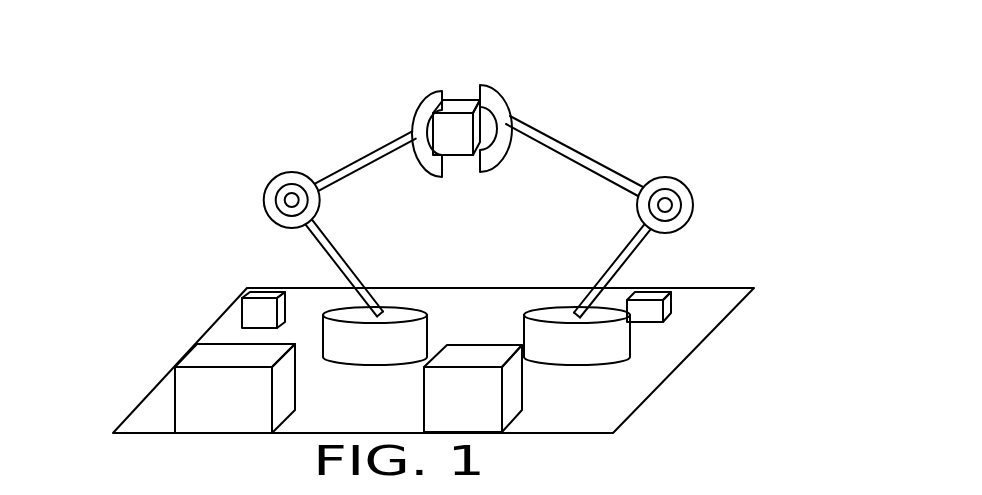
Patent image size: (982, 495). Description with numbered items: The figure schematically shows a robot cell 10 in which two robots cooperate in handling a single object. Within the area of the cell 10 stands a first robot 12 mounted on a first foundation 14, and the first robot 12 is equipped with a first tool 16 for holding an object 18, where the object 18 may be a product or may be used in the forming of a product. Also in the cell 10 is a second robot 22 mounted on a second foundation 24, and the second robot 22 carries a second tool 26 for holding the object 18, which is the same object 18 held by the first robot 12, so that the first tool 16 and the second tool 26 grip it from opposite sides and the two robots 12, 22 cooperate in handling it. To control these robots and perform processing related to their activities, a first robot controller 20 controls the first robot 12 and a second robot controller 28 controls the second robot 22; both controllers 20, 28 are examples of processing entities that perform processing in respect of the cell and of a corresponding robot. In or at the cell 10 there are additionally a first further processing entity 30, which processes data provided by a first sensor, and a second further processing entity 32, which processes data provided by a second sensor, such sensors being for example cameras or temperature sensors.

The robot cell 10 is at (713, 330).
The first robot 12 is at (290, 142).
The first foundation 14 is at (423, 333).
The first tool 16 is at (412, 113).
The object 18 is at (462, 98).
The first robot controller 20 is at (185, 375).
The second robot 22 is at (647, 159).
The second foundation 24 is at (630, 342).
The second tool 26 is at (502, 97).
The second robot controller 28 is at (518, 395).
The first further processing entity 30 is at (265, 290).
The second further processing entity 32 is at (657, 307).